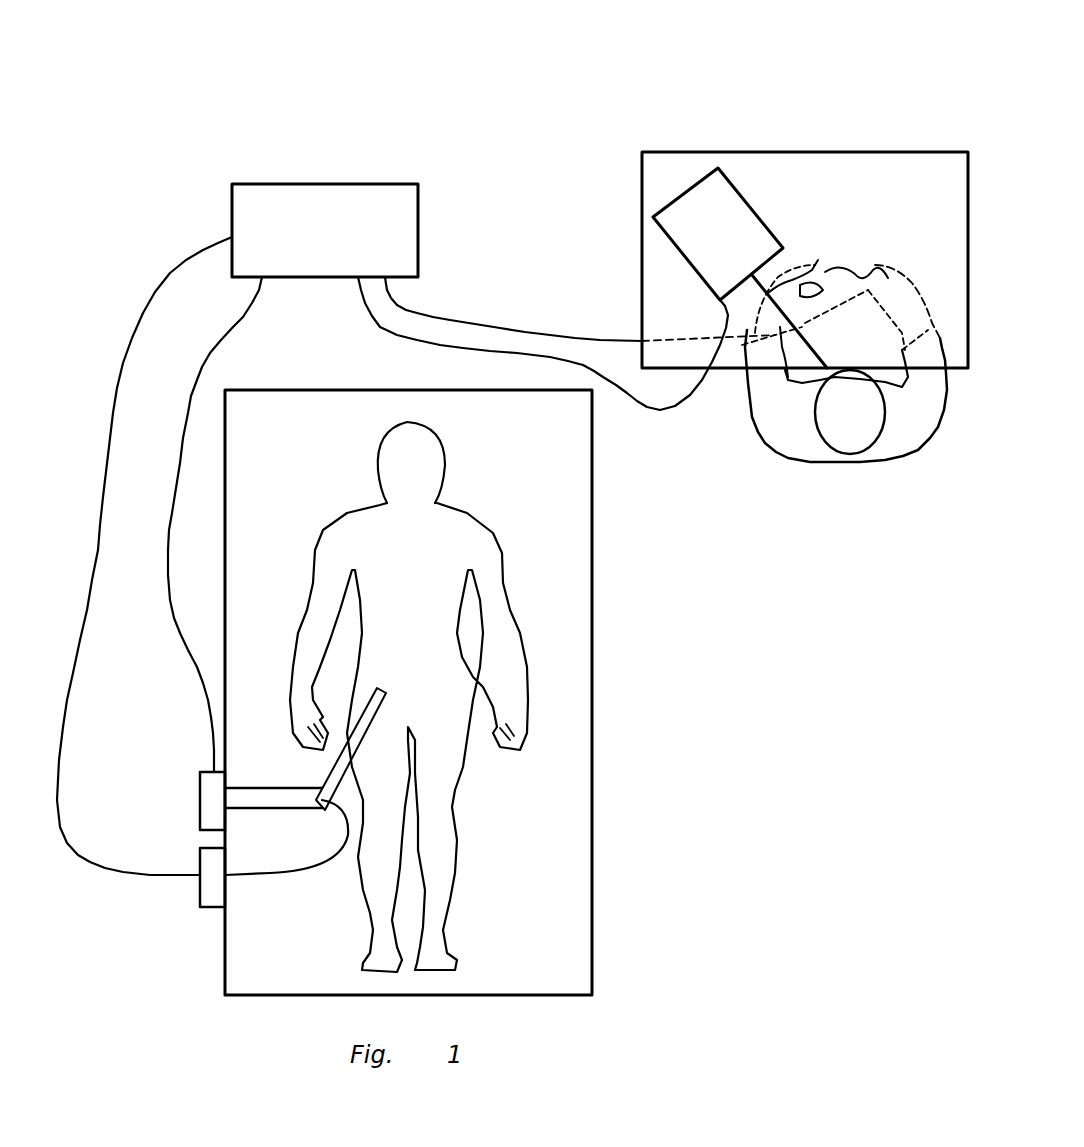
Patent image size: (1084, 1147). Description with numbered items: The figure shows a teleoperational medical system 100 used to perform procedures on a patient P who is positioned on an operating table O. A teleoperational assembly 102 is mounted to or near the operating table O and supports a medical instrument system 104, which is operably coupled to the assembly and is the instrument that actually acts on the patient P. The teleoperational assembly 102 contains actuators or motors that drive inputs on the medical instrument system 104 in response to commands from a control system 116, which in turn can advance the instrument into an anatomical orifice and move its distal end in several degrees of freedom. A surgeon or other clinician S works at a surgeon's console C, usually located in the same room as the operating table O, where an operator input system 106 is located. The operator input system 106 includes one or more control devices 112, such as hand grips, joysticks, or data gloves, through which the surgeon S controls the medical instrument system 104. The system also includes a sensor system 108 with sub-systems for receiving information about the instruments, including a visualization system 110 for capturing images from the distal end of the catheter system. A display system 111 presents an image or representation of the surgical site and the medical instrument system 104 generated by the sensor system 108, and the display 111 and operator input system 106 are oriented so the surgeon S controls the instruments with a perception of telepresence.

The teleoperational medical system 100 is at (424, 76).
The teleoperational assembly 102 is at (196, 814).
The medical instrument system 104 is at (384, 703).
The operator input system 106 is at (782, 130).
The sensor system 108 is at (922, 165).
The visualization system 110 is at (198, 888).
The display system 111 is at (690, 200).
The control device 112 is at (850, 265).
The control system 116 is at (318, 186).
The patient P is at (465, 520).
The operating table O is at (592, 690).
The surgeon S is at (885, 462).
The surgeon's console C is at (850, 160).